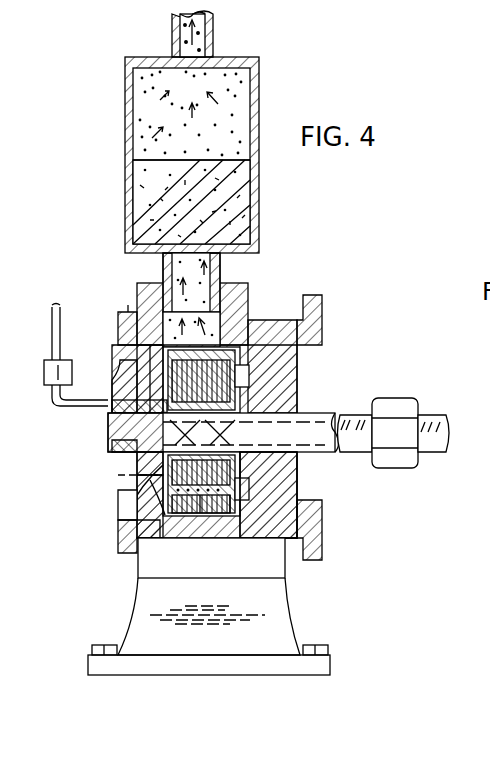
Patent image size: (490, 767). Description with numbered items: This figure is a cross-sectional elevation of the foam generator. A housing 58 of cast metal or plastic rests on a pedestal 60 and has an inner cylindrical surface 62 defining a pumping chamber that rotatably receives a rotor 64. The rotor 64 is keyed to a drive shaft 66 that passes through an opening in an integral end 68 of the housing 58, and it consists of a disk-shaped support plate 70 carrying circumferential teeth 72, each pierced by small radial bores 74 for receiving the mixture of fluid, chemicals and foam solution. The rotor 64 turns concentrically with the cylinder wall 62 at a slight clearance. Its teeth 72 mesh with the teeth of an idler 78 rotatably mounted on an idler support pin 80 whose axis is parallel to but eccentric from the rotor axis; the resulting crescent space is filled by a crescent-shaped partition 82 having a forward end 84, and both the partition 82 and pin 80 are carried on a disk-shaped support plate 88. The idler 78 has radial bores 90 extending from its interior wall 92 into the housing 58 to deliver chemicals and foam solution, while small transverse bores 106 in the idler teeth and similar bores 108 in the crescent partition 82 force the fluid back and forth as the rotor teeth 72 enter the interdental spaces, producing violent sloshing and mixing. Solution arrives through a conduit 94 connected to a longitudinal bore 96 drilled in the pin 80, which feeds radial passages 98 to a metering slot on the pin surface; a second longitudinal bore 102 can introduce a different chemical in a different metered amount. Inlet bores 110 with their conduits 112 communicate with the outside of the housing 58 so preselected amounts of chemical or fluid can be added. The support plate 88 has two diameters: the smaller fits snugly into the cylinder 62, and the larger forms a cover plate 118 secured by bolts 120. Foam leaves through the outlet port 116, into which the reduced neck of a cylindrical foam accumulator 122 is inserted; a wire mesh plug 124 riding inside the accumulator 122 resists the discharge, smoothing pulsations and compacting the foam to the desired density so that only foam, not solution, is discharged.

The housing 58 is at (297, 378).
The pedestal 60 is at (272, 600).
The inner cylindrical surface 62 is at (145, 352).
The rotor 64 is at (297, 408).
The drive shaft 66 is at (360, 420).
The integral end 68 is at (290, 386).
The disk-shaped support plate 70 is at (235, 372).
The circumferential teeth 72 is at (213, 345).
The radial bores 74 is at (235, 500).
The idler 78 is at (138, 490).
The idler support pin 80 is at (118, 442).
The crescent-shaped partition 82 is at (202, 500).
The forward end 84 is at (472, 67).
The disk-shaped support plate 88 is at (158, 515).
The radial bores 90 is at (280, 470).
The interior wall 92 is at (228, 438).
The conduit 94 is at (50, 403).
The longitudinal bore 96 is at (140, 410).
The radial passages 98 is at (140, 380).
The second longitudinal bore 102 is at (130, 455).
The transverse bores 106 is at (250, 486).
The bores 108 is at (255, 500).
The inlet bores 110 is at (118, 535).
The conduits 112 is at (118, 505).
The outlet port 116 is at (232, 290).
The cover plate 118 is at (125, 465).
The bolts 120 is at (122, 315).
The cylindrical foam accumulator 122 is at (127, 115).
The wire mesh plug 124 is at (150, 180).